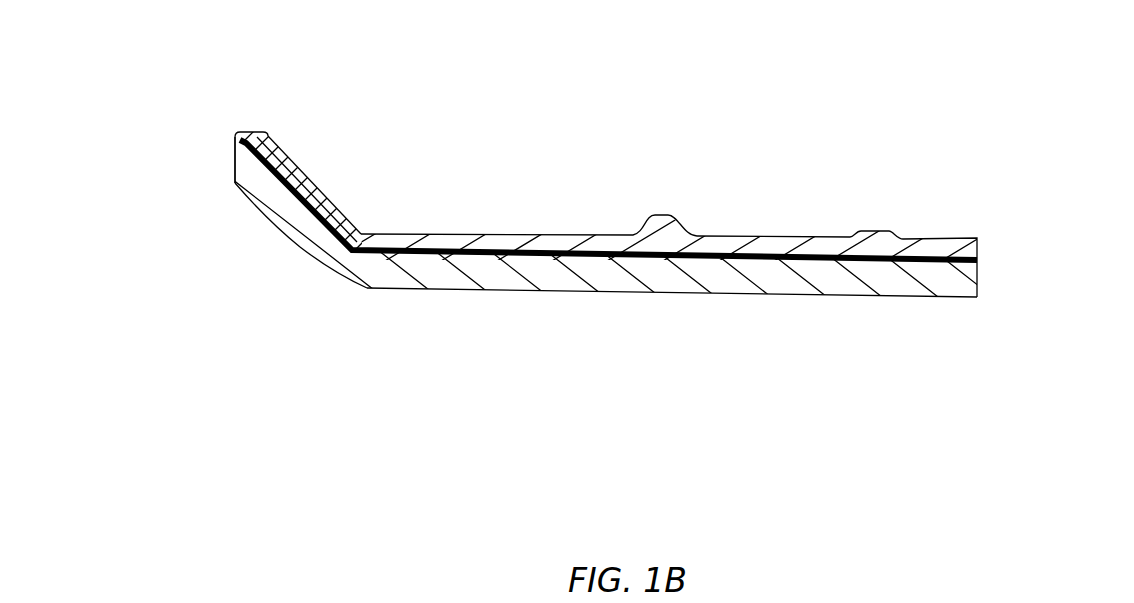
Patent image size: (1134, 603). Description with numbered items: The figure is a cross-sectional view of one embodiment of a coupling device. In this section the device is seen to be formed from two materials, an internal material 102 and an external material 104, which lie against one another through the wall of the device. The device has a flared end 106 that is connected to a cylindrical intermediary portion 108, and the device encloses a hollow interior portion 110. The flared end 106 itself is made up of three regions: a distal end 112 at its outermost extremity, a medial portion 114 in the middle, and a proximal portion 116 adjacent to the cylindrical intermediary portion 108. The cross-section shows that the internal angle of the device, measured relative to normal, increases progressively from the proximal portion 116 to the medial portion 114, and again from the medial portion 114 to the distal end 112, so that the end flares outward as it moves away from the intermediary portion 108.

The internal material 102 is at (234, 171).
The external material 104 is at (253, 147).
The flared end 106 is at (338, 197).
The cylindrical intermediary portion 108 is at (555, 232).
The hollow interior portion 110 is at (527, 305).
The distal end 112 is at (232, 182).
The medial portion 114 is at (262, 234).
The proximal portion 116 is at (330, 287).